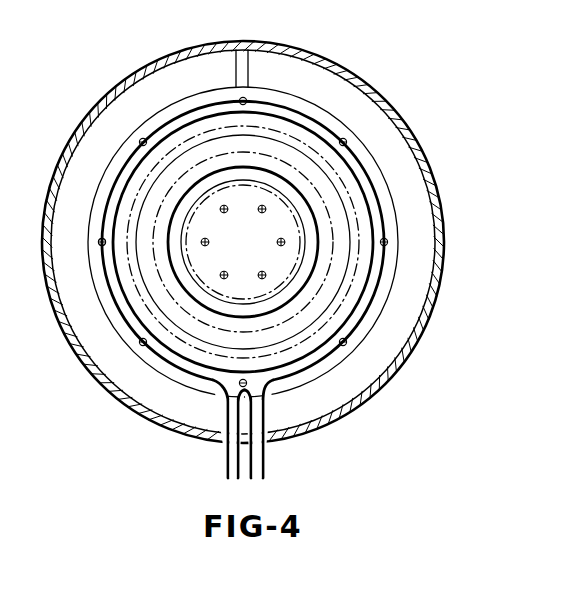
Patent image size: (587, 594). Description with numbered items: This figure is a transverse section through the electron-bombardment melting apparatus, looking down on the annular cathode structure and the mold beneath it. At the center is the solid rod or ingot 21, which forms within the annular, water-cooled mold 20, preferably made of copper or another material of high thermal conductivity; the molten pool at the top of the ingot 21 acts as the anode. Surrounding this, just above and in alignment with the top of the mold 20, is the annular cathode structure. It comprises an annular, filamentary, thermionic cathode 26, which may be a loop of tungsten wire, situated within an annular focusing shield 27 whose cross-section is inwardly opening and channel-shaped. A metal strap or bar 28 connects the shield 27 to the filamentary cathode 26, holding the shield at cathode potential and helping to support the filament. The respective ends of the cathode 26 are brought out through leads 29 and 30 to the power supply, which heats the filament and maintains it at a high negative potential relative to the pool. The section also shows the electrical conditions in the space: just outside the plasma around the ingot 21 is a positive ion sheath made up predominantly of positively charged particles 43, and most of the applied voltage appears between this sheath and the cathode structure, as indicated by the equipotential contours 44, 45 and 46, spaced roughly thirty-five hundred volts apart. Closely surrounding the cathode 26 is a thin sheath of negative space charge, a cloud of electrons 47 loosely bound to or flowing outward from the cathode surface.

The mold 20 is at (300, 152).
The ingot 21 is at (243, 242).
The filamentary cathode 26 is at (157, 114).
The focusing shield 27 is at (440, 212).
The metal strap 28 is at (237, 72).
The lead 29 is at (228, 477).
The lead 30 is at (264, 477).
The positively charged particles 43 is at (277, 240).
The equipotential contour 44 is at (238, 182).
The equipotential contour 45 is at (210, 158).
The equipotential contour 46 is at (148, 194).
The electrons 47 is at (100, 246).